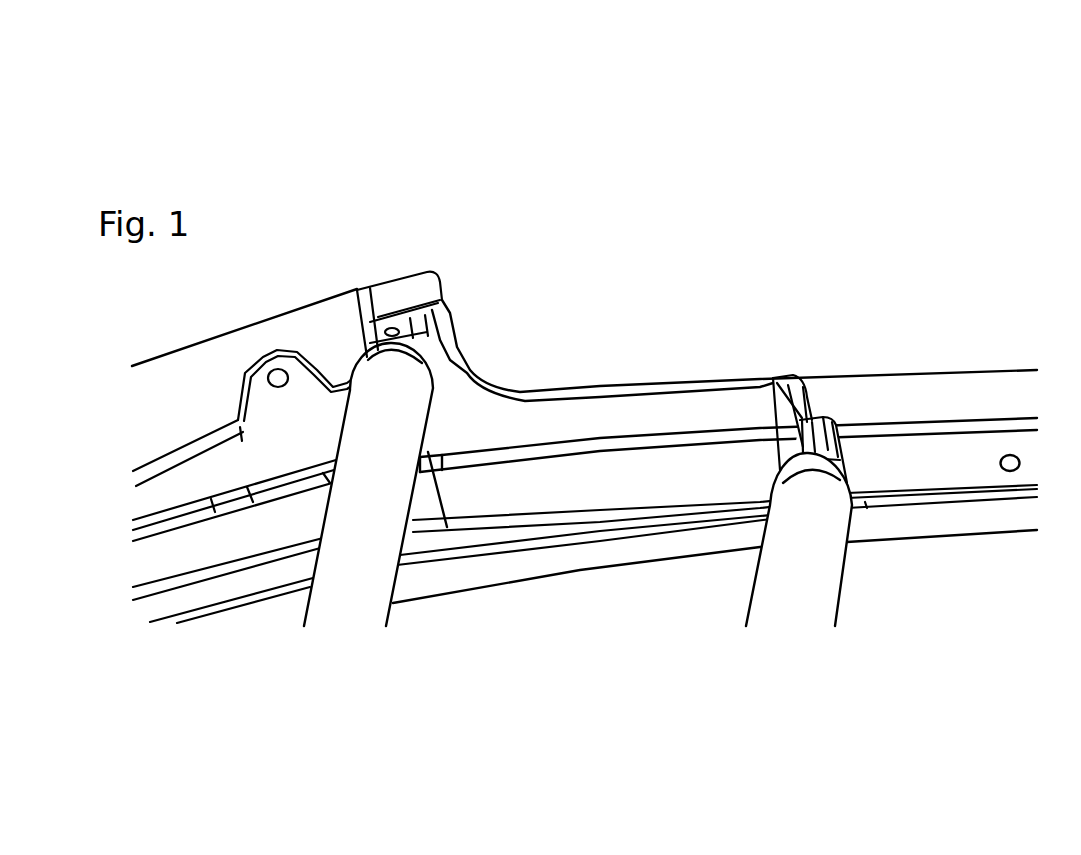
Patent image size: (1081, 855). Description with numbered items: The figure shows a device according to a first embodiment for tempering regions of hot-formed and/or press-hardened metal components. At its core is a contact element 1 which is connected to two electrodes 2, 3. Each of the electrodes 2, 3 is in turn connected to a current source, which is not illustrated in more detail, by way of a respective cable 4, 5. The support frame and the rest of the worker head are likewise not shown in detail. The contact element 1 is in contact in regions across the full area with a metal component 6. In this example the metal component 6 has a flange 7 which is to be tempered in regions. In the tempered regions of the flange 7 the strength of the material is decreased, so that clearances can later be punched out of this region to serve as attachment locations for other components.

The contact element 1 is at (672, 407).
The electrode 2 is at (442, 298).
The electrode 3 is at (826, 441).
The cable 4 is at (353, 588).
The cable 5 is at (795, 602).
The metal component 6 is at (592, 477).
The flange 7 is at (420, 290).